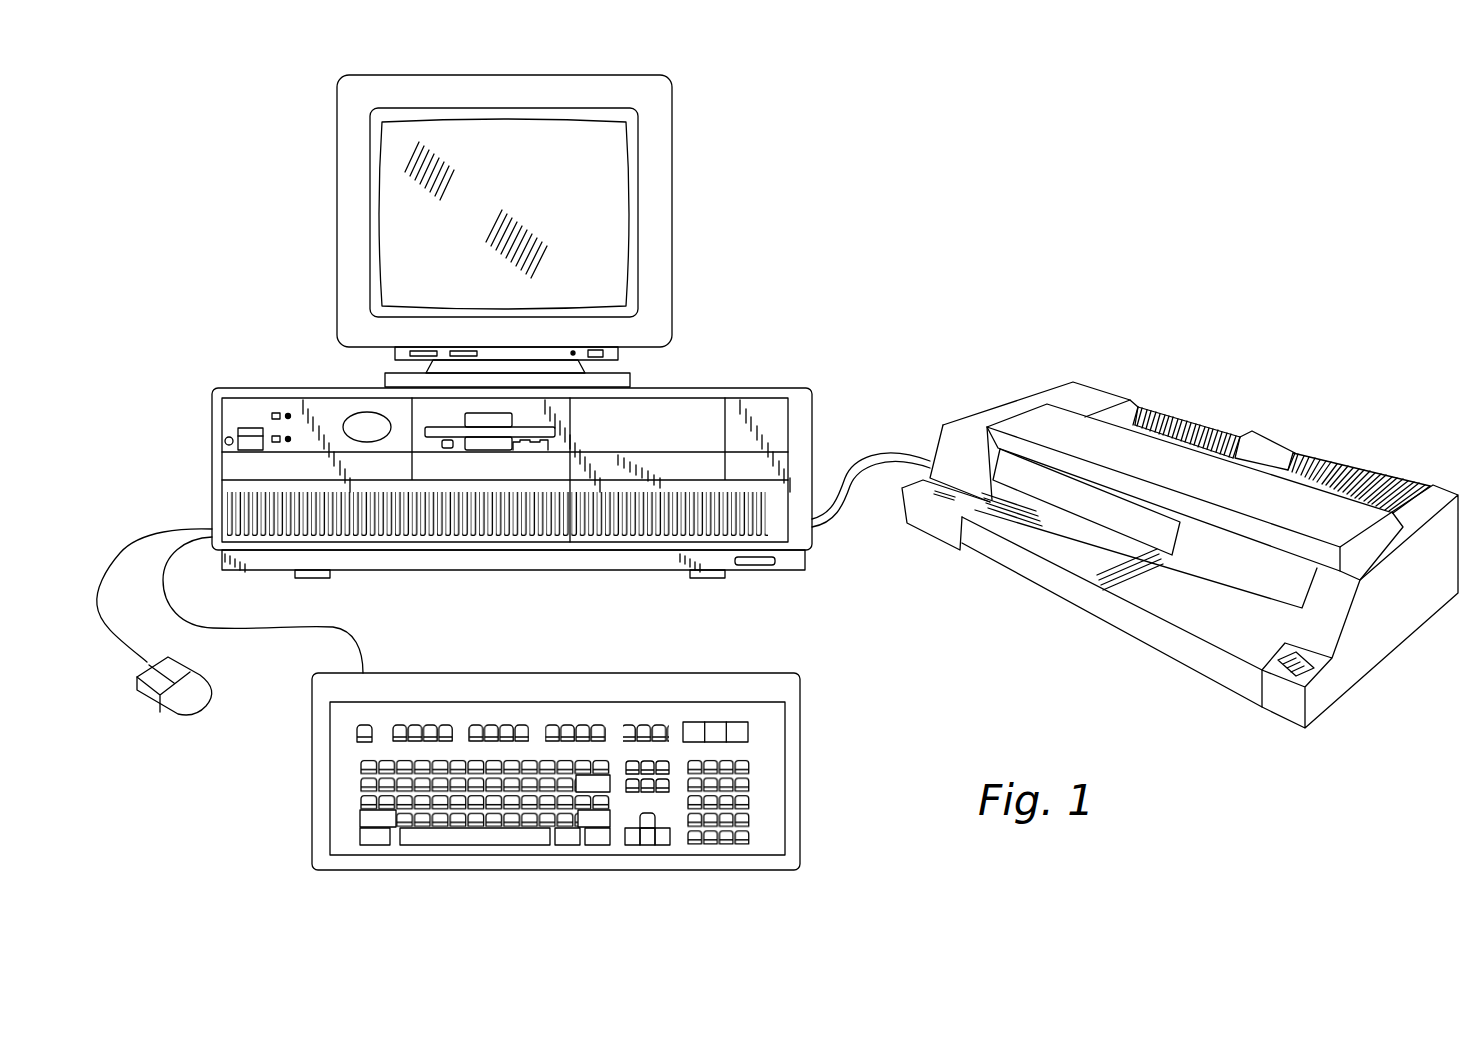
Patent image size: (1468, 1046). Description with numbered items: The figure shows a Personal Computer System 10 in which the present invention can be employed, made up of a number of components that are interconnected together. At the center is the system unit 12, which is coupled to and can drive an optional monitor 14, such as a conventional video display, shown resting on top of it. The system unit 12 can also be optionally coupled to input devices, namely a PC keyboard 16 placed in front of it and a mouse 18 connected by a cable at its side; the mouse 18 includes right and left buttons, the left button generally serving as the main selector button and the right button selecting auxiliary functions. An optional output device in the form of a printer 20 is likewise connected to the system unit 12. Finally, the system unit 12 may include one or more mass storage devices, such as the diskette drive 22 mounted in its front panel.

The Personal Computer System 10 is at (892, 195).
The system unit 12 is at (733, 381).
The monitor 14 is at (683, 240).
The PC keyboard 16 is at (672, 671).
The mouse 18 is at (155, 693).
The printer 20 is at (1006, 392).
The diskette drive 22 is at (500, 445).